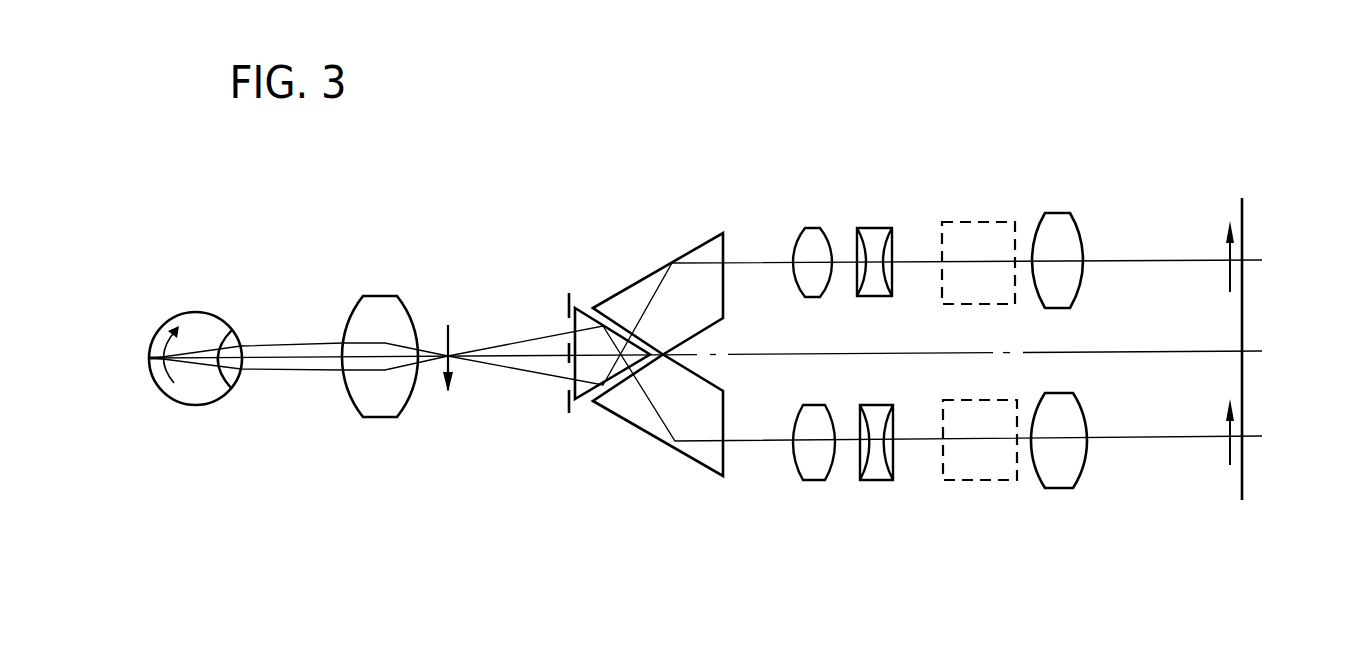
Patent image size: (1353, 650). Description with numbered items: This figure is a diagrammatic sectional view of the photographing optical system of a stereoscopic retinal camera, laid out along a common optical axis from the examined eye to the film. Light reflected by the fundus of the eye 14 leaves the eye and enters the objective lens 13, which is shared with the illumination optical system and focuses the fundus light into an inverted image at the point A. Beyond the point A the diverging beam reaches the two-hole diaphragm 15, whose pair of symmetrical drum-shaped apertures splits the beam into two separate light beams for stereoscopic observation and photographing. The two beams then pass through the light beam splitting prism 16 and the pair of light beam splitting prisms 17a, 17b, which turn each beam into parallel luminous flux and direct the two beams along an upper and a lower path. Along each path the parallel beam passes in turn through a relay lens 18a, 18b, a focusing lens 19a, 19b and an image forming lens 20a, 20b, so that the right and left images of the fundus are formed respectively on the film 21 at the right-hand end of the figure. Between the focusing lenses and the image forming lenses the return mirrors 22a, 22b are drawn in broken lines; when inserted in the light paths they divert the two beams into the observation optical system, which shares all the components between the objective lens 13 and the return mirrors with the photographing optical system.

The objective lens 13 is at (380, 320).
The eye 14 is at (215, 313).
The focal point A is at (455, 362).
The two-hole diaphragm 15 is at (550, 413).
The light beam splitting prism 16 is at (580, 312).
The light beam splitting prism 17a is at (647, 282).
The light beam splitting prism 17b is at (632, 412).
The relay lens 18a is at (812, 238).
The relay lens 18b is at (813, 477).
The focusing lens 19a is at (870, 240).
The focusing lens 19b is at (877, 477).
The image forming lens 20a is at (1067, 237).
The image forming lens 20b is at (1073, 472).
The film 21 is at (1242, 330).
The return mirror 22a is at (977, 222).
The return mirror 22b is at (977, 480).